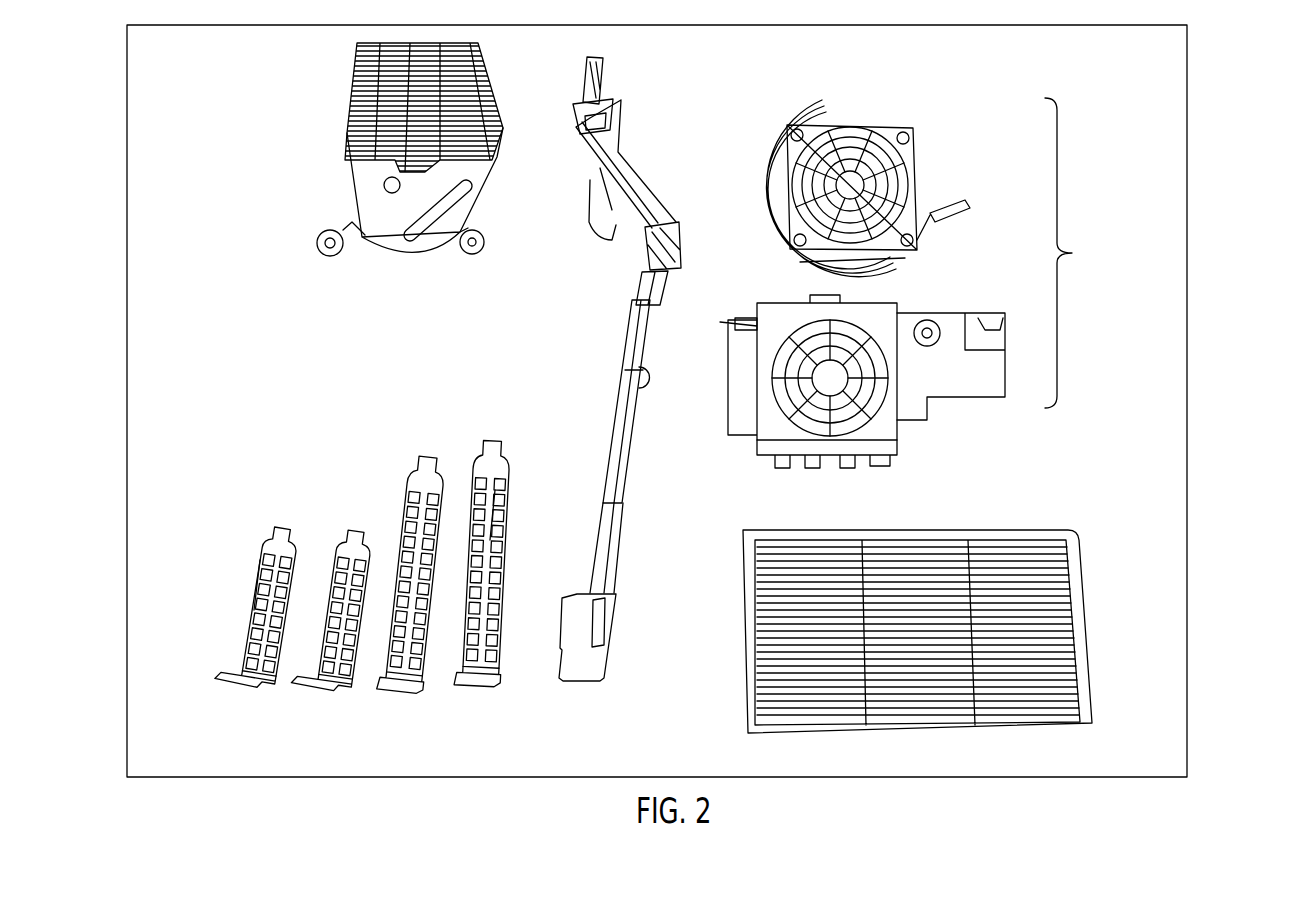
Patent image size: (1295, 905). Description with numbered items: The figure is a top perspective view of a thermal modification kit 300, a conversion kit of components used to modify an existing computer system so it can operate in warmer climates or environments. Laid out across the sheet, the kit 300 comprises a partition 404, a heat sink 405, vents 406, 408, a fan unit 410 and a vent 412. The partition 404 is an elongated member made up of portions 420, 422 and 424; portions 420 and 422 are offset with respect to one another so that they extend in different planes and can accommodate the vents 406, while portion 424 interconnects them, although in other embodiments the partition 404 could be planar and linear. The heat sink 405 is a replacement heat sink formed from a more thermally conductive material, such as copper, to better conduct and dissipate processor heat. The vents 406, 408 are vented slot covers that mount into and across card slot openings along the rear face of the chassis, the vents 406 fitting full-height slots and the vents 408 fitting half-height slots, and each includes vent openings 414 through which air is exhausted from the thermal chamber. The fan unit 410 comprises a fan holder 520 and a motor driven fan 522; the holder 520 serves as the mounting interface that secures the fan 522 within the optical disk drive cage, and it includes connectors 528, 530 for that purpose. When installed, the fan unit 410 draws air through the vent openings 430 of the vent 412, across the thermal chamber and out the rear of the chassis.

The thermal modification kit 300 is at (1232, 112).
The heat sink 405 is at (350, 93).
The partition 404 is at (623, 177).
The portion 422 is at (573, 100).
The portion 424 is at (630, 173).
The portion 420 is at (625, 467).
The vents 406 is at (433, 458).
The vents 408 is at (270, 690).
The vent openings 414 is at (255, 580).
The fan unit 410 is at (914, 286).
The fan 522 is at (900, 133).
The fan holder 520 is at (925, 440).
The connector 528 is at (1000, 318).
The connector 530 is at (740, 318).
The vent 412 is at (948, 612).
The vent openings 430 is at (1040, 682).